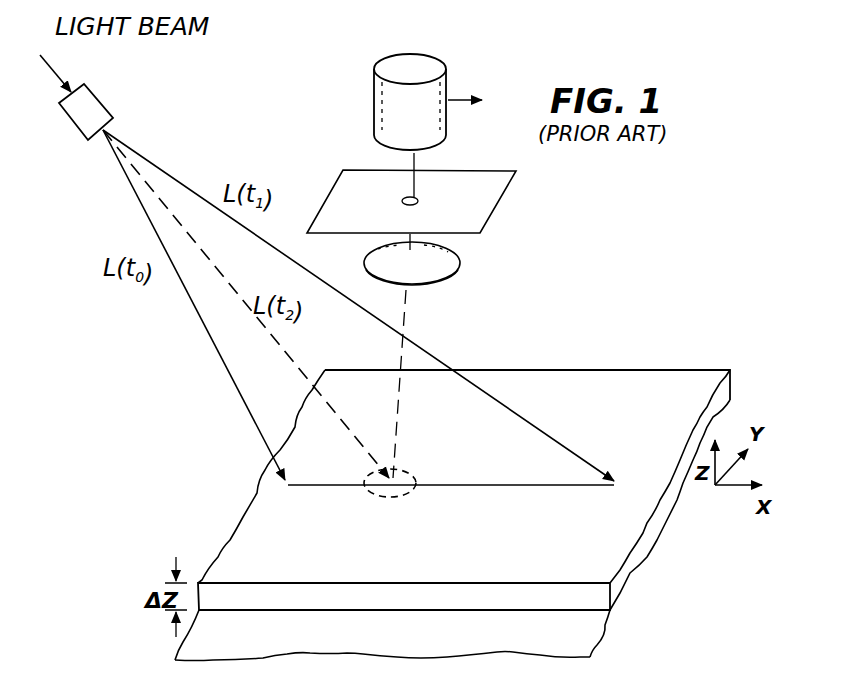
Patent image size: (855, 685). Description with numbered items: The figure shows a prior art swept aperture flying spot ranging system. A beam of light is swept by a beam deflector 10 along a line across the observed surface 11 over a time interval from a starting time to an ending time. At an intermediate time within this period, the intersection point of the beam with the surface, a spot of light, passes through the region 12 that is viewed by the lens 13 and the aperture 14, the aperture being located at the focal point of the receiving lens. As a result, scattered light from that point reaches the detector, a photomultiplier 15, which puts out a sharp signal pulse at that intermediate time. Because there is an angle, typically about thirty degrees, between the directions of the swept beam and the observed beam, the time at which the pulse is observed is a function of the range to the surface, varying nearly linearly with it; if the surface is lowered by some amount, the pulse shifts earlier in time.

The beam deflector 10 is at (104, 98).
The observed surface 11 is at (266, 506).
The region 12 is at (415, 475).
The lens 13 is at (459, 263).
The aperture 14 is at (418, 200).
The photomultiplier 15 is at (443, 60).